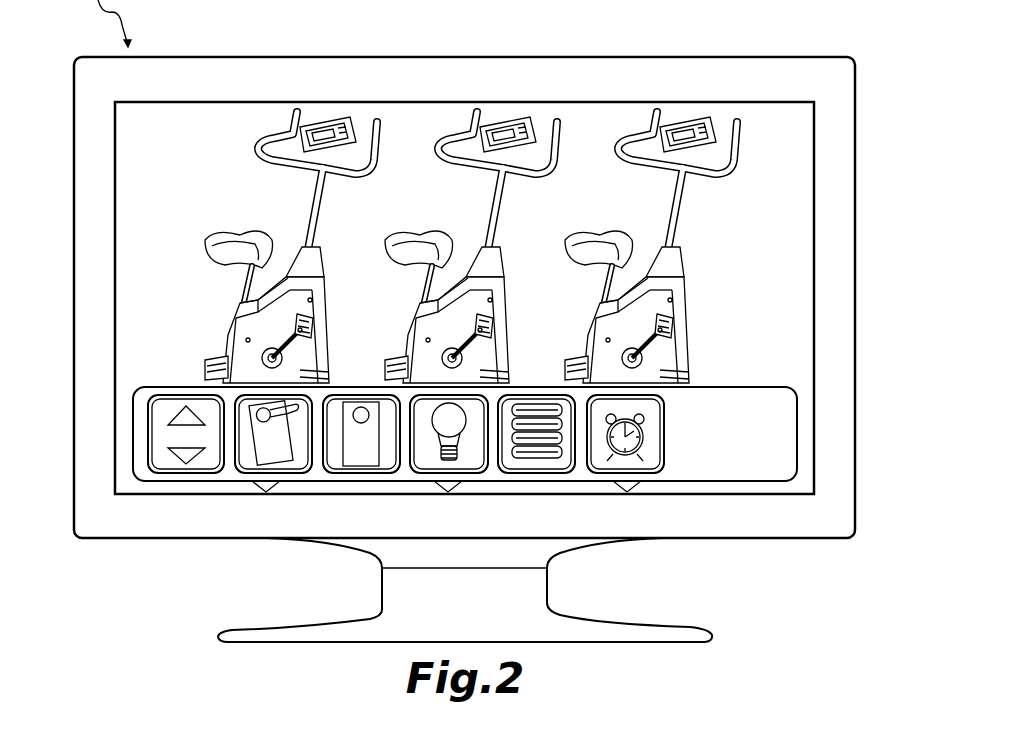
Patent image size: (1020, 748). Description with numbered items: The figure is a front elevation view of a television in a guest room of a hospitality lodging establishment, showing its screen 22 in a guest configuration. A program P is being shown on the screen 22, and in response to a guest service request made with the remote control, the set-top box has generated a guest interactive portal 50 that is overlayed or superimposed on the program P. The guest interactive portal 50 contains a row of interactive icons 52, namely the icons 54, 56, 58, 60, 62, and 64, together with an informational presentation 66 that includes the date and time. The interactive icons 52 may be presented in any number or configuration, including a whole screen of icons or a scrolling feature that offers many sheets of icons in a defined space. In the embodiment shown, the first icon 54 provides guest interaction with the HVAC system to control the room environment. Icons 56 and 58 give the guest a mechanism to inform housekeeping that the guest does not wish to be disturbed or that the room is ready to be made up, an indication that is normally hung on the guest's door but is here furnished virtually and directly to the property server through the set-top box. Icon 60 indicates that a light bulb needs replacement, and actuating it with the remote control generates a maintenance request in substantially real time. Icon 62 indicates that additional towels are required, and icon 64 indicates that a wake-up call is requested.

The screen 22 is at (135, 233).
The program P is at (215, 117).
The guest interactive portal 50 is at (412, 425).
The interactive icons 52 is at (154, 382).
The icon 54 is at (195, 473).
The icon 56 is at (292, 473).
The icon 58 is at (385, 473).
The icon 60 is at (468, 466).
The icon 62 is at (545, 466).
The icon 64 is at (613, 466).
The informational presentation 66 is at (728, 453).